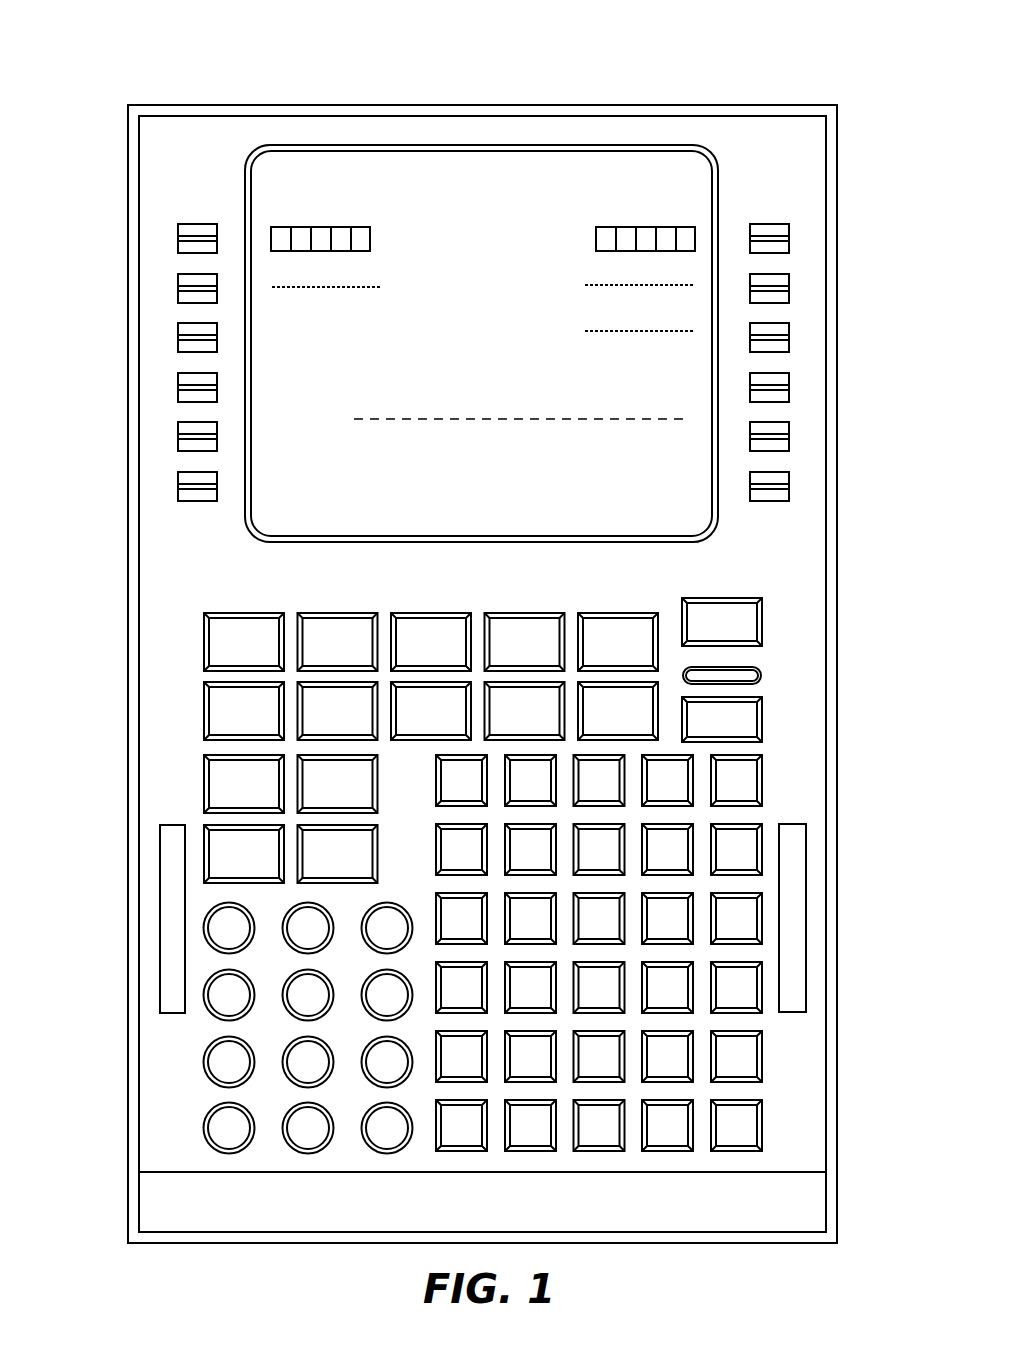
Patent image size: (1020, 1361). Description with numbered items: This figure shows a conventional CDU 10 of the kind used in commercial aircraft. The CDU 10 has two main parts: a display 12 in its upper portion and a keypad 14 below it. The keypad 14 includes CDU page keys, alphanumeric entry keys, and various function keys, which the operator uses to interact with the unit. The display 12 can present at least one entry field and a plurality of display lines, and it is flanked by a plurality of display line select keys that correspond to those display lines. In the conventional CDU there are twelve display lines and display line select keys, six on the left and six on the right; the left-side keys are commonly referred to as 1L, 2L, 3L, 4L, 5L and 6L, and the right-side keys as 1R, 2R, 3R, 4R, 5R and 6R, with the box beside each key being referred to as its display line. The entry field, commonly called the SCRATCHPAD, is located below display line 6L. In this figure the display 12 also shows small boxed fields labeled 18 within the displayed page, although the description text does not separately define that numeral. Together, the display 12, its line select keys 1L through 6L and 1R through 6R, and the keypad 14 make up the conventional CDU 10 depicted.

The CDU 10 is at (143, 70).
The display 12 is at (505, 146).
The keypad 14 is at (189, 592).
The data entry box prompt 18 is at (271, 240).
The display line select key 1L is at (178, 237).
The display line select key 2L is at (178, 287).
The display line select key 3L is at (178, 336).
The display line select key 4L is at (178, 386).
The display line select key 5L is at (178, 435).
The display line select key 6L is at (178, 485).
The display line select key 1R is at (789, 237).
The display line select key 2R is at (789, 287).
The display line select key 3R is at (789, 336).
The display line select key 4R is at (789, 386).
The display line select key 5R is at (789, 435).
The display line select key 6R is at (789, 485).